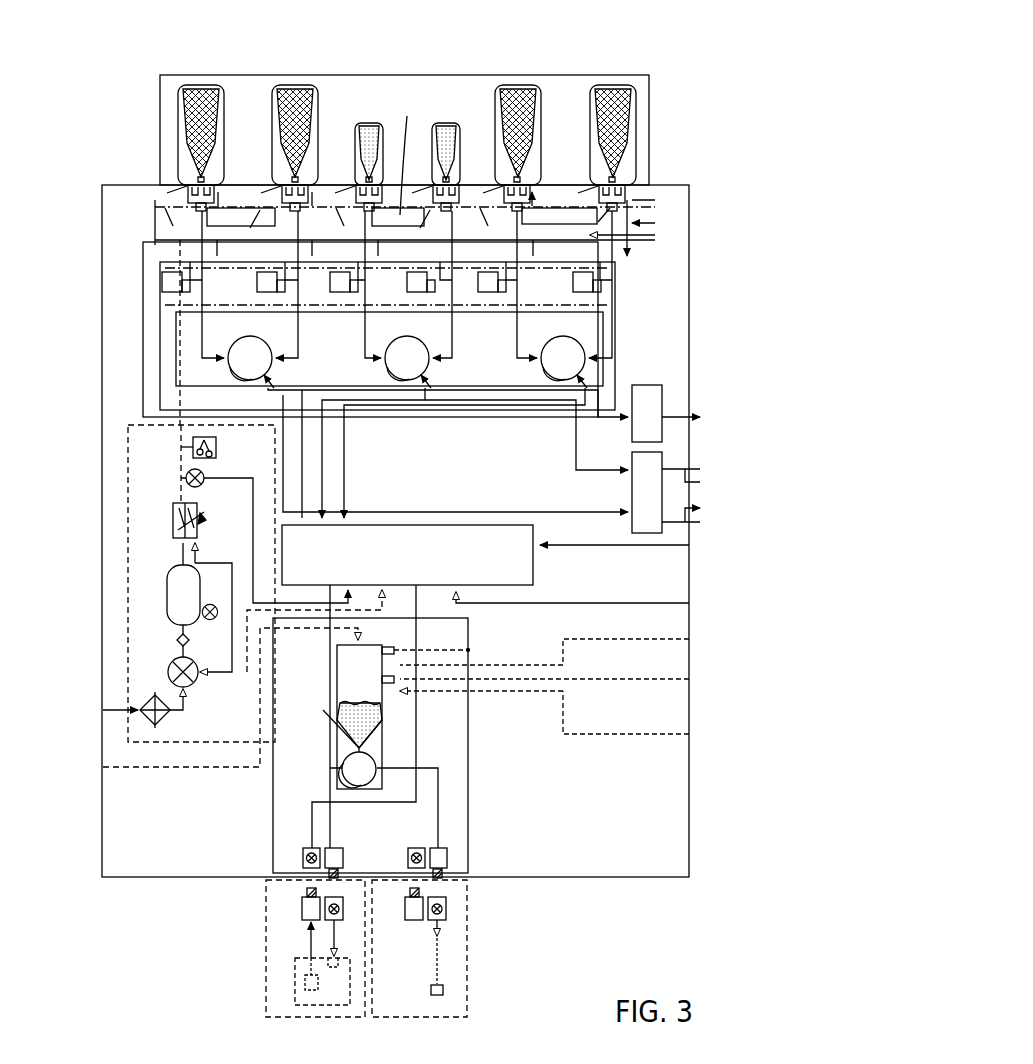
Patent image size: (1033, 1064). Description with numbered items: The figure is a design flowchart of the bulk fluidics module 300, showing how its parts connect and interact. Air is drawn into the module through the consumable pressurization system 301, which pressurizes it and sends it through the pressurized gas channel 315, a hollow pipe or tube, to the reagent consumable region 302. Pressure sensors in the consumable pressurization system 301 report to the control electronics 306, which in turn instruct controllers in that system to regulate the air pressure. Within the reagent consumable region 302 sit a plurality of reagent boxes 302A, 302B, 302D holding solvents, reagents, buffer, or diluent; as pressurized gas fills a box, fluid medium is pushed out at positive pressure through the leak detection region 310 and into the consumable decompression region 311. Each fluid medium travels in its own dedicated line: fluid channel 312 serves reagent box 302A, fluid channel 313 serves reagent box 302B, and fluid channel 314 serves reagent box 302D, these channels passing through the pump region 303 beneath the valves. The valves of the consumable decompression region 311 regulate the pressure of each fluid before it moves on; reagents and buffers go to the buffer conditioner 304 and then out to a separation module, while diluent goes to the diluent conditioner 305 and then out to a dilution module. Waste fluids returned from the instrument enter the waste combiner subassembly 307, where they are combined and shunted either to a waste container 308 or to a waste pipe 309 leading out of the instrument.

The bulk fluidics module 300 is at (717, 80).
The consumable pressurization system 301 is at (128, 640).
The reagent consumable region 302 is at (160, 130).
The reagent box 302A is at (300, 75).
The reagent box 302B is at (450, 75).
The reagent box 302D is at (608, 75).
The pump assembly 303 is at (100, 332).
The buffer conditioner 304 is at (632, 493).
The diluent conditioner 305 is at (652, 385).
The control electronics 306 is at (463, 525).
The waste combiner subassembly 307 is at (468, 797).
The waste container 308 is at (266, 945).
The waste pipe 309 is at (467, 960).
The leak detection region 310 is at (100, 210).
The consumable decompression region 311 is at (100, 268).
The fluid channel 312 is at (202, 320).
The fluid channel 313 is at (340, 330).
The fluid channel 314 is at (517, 318).
The pressurized gas channel 315 is at (165, 398).